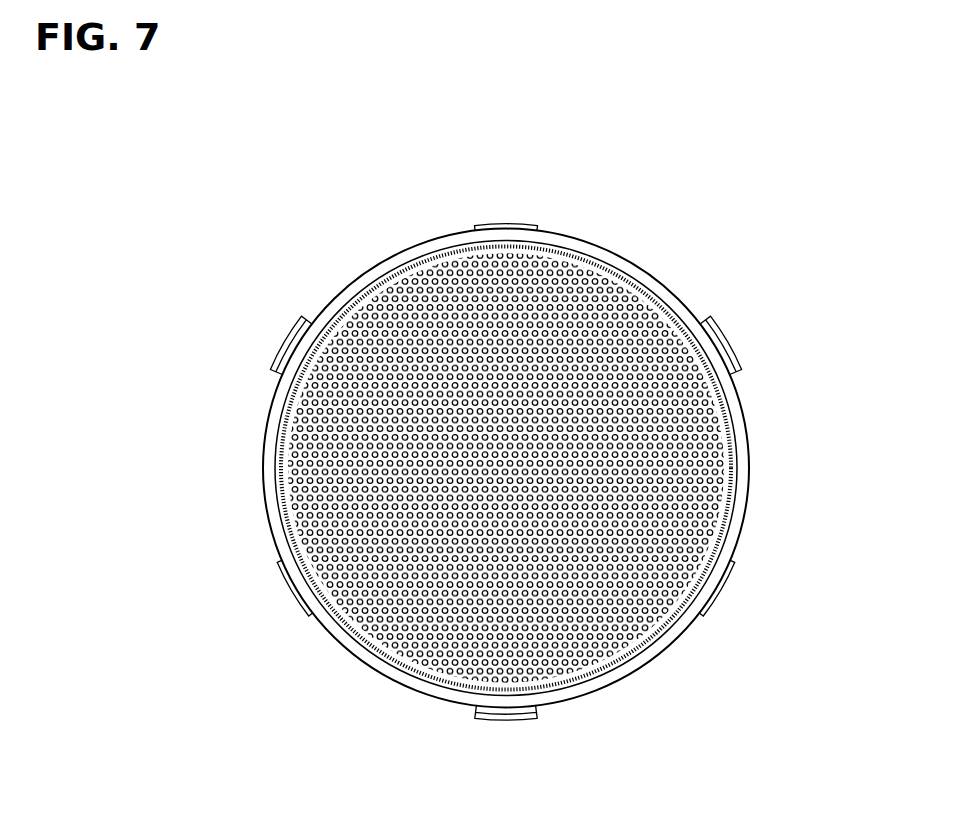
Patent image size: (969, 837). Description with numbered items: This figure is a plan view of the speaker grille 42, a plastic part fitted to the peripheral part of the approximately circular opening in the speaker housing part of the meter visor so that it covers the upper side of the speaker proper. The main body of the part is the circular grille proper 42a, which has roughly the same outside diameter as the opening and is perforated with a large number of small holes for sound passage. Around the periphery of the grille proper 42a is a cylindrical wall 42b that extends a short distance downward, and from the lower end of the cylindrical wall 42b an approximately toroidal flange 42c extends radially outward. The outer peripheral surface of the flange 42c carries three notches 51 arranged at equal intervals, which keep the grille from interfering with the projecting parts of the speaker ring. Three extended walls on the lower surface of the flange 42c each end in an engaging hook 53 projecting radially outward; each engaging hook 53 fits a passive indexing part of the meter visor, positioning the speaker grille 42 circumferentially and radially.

The speaker grille 42 is at (660, 256).
The grille proper 42a is at (716, 450).
The cylindrical wall 42b is at (598, 250).
The flange 42c is at (683, 294).
The notch 51 is at (526, 227).
The engaging hook 53 is at (278, 338).